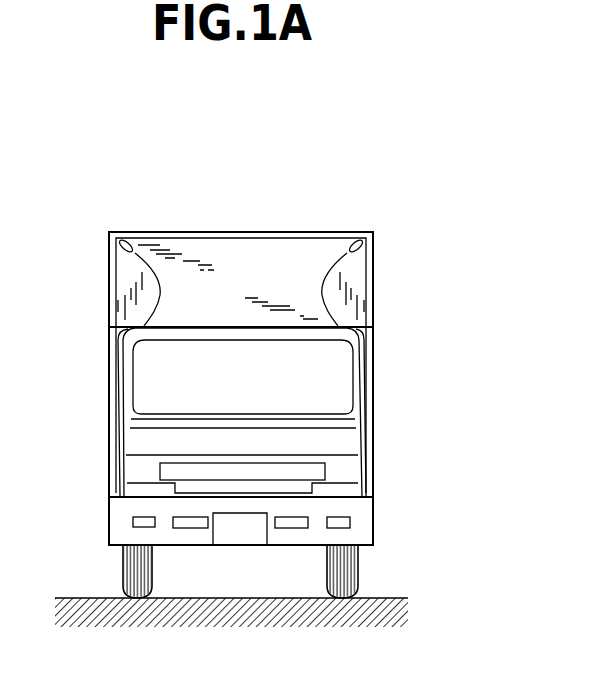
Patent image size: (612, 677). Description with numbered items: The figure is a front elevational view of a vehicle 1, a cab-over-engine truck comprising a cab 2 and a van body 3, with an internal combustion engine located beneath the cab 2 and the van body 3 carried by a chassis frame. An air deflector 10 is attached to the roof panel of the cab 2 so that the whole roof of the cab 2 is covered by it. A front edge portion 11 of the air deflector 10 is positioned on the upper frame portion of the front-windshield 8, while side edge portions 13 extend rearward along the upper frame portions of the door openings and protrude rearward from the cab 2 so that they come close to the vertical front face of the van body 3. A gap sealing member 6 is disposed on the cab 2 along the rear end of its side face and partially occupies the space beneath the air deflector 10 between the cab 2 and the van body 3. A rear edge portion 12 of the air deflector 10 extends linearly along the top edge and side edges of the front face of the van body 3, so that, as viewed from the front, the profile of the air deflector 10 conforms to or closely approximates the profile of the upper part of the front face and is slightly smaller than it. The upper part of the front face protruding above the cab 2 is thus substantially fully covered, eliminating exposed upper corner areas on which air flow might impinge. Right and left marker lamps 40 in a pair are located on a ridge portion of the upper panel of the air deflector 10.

The vehicle 1 is at (468, 318).
The cab 2 is at (374, 440).
The van body 3 is at (192, 232).
The gap sealing member 6 is at (120, 345).
The front-windshield 8 is at (152, 382).
The air deflector 10 is at (352, 280).
The front edge portion 11 is at (234, 320).
The rear edge portion 12 is at (282, 237).
The side edge portions 13 is at (120, 326).
The marker lamps 40 is at (122, 236).